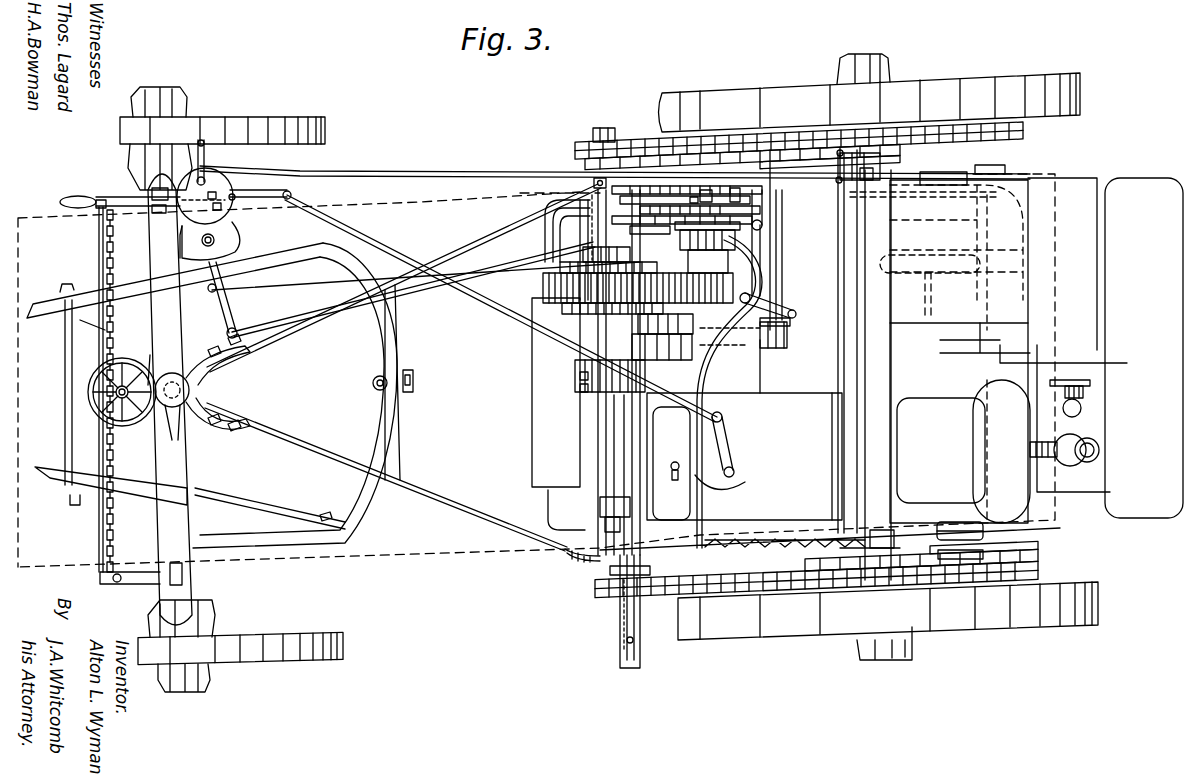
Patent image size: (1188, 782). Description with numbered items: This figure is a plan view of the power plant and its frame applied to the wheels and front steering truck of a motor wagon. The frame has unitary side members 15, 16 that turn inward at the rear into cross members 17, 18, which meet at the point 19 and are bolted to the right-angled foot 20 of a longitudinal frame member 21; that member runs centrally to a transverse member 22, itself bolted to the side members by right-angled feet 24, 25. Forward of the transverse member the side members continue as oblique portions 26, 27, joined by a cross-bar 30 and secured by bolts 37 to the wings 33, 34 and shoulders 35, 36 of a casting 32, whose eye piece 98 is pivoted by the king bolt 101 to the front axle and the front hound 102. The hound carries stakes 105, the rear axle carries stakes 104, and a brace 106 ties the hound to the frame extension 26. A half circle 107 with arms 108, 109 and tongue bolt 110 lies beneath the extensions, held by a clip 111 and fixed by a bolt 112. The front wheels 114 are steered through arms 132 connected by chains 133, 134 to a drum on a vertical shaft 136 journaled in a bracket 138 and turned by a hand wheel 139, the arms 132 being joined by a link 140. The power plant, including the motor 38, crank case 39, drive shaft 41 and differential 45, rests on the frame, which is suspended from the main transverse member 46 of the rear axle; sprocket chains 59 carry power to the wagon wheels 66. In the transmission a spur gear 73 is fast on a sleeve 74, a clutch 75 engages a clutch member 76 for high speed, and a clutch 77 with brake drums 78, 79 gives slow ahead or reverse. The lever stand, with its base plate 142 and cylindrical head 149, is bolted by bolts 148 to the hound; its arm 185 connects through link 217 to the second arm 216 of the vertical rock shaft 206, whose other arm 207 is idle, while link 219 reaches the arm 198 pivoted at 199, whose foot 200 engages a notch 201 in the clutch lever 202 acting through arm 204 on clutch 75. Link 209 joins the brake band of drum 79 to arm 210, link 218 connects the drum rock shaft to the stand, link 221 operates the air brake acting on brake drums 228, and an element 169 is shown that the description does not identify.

The side member 15 is at (658, 620).
The side member 16 is at (778, 185).
The cross member 17 is at (1035, 432).
The cross member 18 is at (1030, 268).
The meeting point 19 is at (1033, 338).
The right-angled foot 20 is at (1030, 326).
The longitudinal frame member 21 is at (1000, 372).
The transverse member 22 is at (575, 360).
The right-angled foot 24 is at (588, 556).
The right-angled foot 25 is at (545, 222).
The oblique portion 26 is at (460, 502).
The oblique portion 27 is at (452, 248).
The cross-bar 30 is at (400, 440).
The casting 32 is at (172, 400).
The wing 33 is at (248, 418).
The wing 34 is at (250, 368).
The shoulder 35 is at (215, 425).
The shoulder 36 is at (212, 362).
The bolt 37 is at (230, 336).
The motor 38 is at (992, 515).
The crank case 39 is at (762, 540).
The drive shaft 41 is at (615, 573).
The differential 45 is at (565, 265).
The main transverse member 46 is at (530, 440).
The sprocket chain 59 is at (660, 140).
The wheel 66 is at (913, 90).
The spur gear 73 is at (760, 280).
The sleeve 74 is at (770, 248).
The clutch 75 is at (585, 330).
The clutch member 76 is at (788, 338).
The clutch 77 is at (762, 232).
The drum 78 is at (730, 187).
The drum 79 is at (753, 187).
The eye piece 98 is at (158, 360).
The king bolt 101 is at (162, 410).
The front hound 102 is at (106, 229).
The stake 104 is at (870, 178).
The stake 105 is at (167, 190).
The brace 106 is at (272, 492).
The half circle 107 is at (385, 512).
The arm 108 is at (55, 480).
The arm 109 is at (44, 300).
The bolt 110 is at (66, 368).
The clip 111 is at (415, 372).
The bolt 112 is at (373, 386).
The front wheel 114 is at (260, 117).
The arm 132 is at (118, 192).
The chain 133 is at (105, 318).
The chain 134 is at (112, 449).
The shaft 136 is at (116, 390).
The bracket 138 is at (95, 415).
The hand wheel 139 is at (105, 362).
The link 140 is at (97, 244).
The base plate 142 is at (226, 238).
The bolt 148 is at (195, 252).
The cylindrical head 149 is at (238, 168).
The lever 169 is at (70, 203).
The arm 185 is at (208, 292).
The arm 198 is at (730, 443).
The pivot 199 is at (736, 472).
The foot 200 is at (730, 485).
The notch 201 is at (765, 492).
The clutch lever 202 is at (745, 368).
The arm 204 is at (795, 322).
The rock shaft 206 is at (760, 300).
The arm 207 is at (790, 308).
The link 209 is at (640, 135).
The arm 210 is at (592, 180).
The second arm 216 is at (760, 266).
The link 217 is at (474, 262).
The link 218 is at (400, 257).
The link 219 is at (462, 290).
The link 221 is at (440, 170).
The brake drum 228 is at (950, 163).